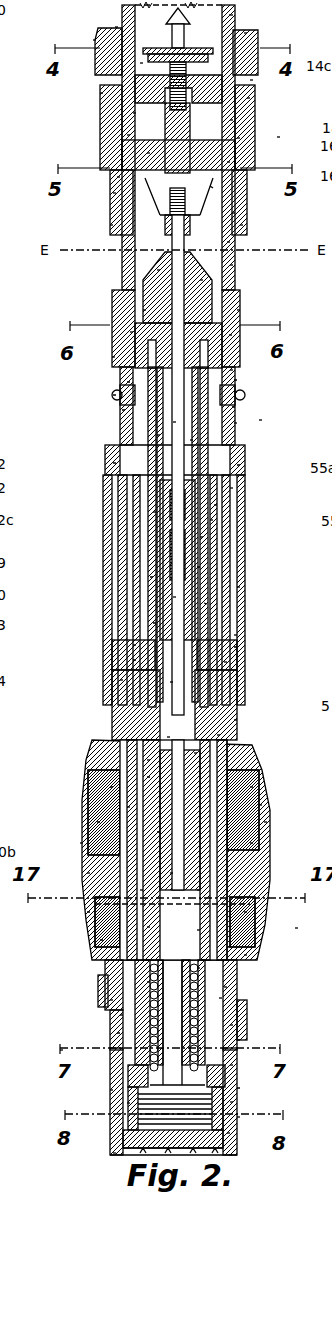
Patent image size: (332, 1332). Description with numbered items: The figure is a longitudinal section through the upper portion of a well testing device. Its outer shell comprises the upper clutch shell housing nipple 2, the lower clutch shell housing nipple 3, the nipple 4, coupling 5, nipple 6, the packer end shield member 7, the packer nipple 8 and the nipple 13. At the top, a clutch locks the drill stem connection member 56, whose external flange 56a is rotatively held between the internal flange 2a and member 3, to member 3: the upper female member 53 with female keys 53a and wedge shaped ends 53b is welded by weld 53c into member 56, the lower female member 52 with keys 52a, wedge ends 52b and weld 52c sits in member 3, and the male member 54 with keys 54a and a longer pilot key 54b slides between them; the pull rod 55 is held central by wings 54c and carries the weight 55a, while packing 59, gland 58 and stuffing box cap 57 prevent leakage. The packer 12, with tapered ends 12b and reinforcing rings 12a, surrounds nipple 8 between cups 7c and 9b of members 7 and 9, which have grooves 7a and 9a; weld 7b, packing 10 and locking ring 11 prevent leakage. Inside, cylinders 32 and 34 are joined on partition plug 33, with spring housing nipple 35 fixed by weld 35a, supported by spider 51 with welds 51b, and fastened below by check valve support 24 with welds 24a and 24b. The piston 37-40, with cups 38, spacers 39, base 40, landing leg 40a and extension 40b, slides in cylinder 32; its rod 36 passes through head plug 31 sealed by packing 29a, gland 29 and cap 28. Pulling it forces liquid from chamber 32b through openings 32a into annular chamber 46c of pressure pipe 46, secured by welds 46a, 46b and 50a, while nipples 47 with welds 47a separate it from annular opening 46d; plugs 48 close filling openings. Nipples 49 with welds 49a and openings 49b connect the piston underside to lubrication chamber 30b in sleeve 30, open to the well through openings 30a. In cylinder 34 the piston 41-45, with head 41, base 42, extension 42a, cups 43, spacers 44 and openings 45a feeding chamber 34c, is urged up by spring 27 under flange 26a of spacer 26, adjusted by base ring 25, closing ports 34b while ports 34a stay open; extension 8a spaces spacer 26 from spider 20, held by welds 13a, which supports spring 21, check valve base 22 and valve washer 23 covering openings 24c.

The upper clutch shell housing nipple 2 is at (280, 137).
The internal flange 2a is at (250, 98).
The lower clutch shell housing nipple 3 is at (235, 213).
The nipple 4 is at (233, 265).
The coupling 5 is at (240, 310).
The nipple 6 is at (237, 423).
The packer end shield member 7 is at (237, 720).
The grooves 7a is at (253, 787).
The weld 7b is at (220, 735).
The cup or shield 7c is at (262, 805).
The packer nipple 8 is at (110, 1000).
The lower extension 8a is at (240, 1117).
The packer end shield member 9 is at (247, 955).
The grooves 9a is at (230, 947).
The cup or shield 9b is at (298, 928).
The packing 10 is at (222, 998).
The locking ring 11 is at (233, 1025).
The packer 12 is at (80, 843).
The steel reinforcing rings 12a is at (97, 822).
The tapered ends 12b is at (110, 787).
The nipple 13 is at (232, 1155).
The welds 13a is at (230, 1133).
The valve landing spider 20 is at (113, 1153).
The coiled spring 21 is at (127, 1103).
The check valve base 22 is at (110, 1090).
The valve washer 23 is at (233, 1102).
The check valve support 24 is at (233, 1065).
The weld 24a is at (60, 1050).
The weld 24b is at (120, 1015).
The openings 24c is at (240, 1088).
The base ring 25 is at (240, 1040).
The valve travel spacer 26 is at (147, 982).
The externally flanged upper end 26a is at (157, 960).
The coiled spring 27 is at (227, 987).
The stuffing box cap 28 is at (157, 270).
The gland 29 is at (203, 280).
The packing 29a is at (143, 310).
The crimped sleeve 30 is at (240, 587).
The openings 30a is at (240, 465).
The annular lubrication chamber 30b is at (233, 488).
The cylinder head plug 31 is at (232, 335).
The nipple (upper cylinder) 32 is at (157, 435).
The openings 32a is at (262, 420).
The chamber 32b is at (193, 440).
The partition plug 33 is at (173, 682).
The nipple (lower cylinder) 34 is at (147, 760).
The pressure ports 34a is at (197, 753).
The discharge ports 34b is at (200, 930).
The annular chamber 34c is at (173, 873).
The spring housing nipple 35 is at (200, 968).
The weld 35a is at (147, 927).
The piston rod 36 is at (173, 422).
The piston head 37 is at (153, 512).
The cups 38 is at (207, 604).
The spacers 39 is at (200, 567).
The piston base 40 is at (237, 635).
The landing leg 40a is at (227, 662).
The cup carrier extension 40b is at (173, 597).
The piston spacer head 41 is at (167, 737).
The piston base 42 is at (87, 873).
The reduced diameter extension 42a is at (127, 807).
The cups 43 is at (267, 822).
The cup spacers 44 is at (147, 777).
The intake valve piston 45 is at (247, 912).
The openings 45a is at (200, 890).
The pressure pipe 46 is at (213, 520).
The weld 46a is at (140, 890).
The weld 46b is at (233, 370).
The annular chamber 46c is at (203, 537).
The annular opening 46d is at (217, 505).
The short nipples 47 is at (237, 380).
The welds 47a is at (235, 407).
The plugs 48 is at (237, 392).
The short nipples 49 is at (133, 645).
The welds 49a is at (120, 680).
The openings 49b is at (237, 647).
The welds 50a is at (253, 843).
The support spider 51 is at (112, 357).
The welds 51b is at (130, 332).
The lower female clutch member 52 is at (230, 162).
The female keys 52a is at (213, 188).
The wedge shaped upper ends 52b is at (117, 177).
The weld 52c is at (113, 193).
The upper clutch female member 53 is at (240, 138).
The female keys 53a is at (127, 135).
The wedge shaped ends 53b is at (133, 113).
The weld 53c is at (147, 153).
The male clutch member 54 is at (243, 225).
The keys 54a is at (110, 225).
The longest key 54b is at (230, 242).
The wings 54c is at (100, 93).
The pull rod 55 is at (115, 27).
The weight 55a is at (140, 63).
The drill stem connection member 56 is at (233, 15).
The external flange 56a is at (233, 120).
The stuffing box cap 57 is at (247, 33).
The gland 58 is at (93, 40).
The packing 59 is at (253, 80).